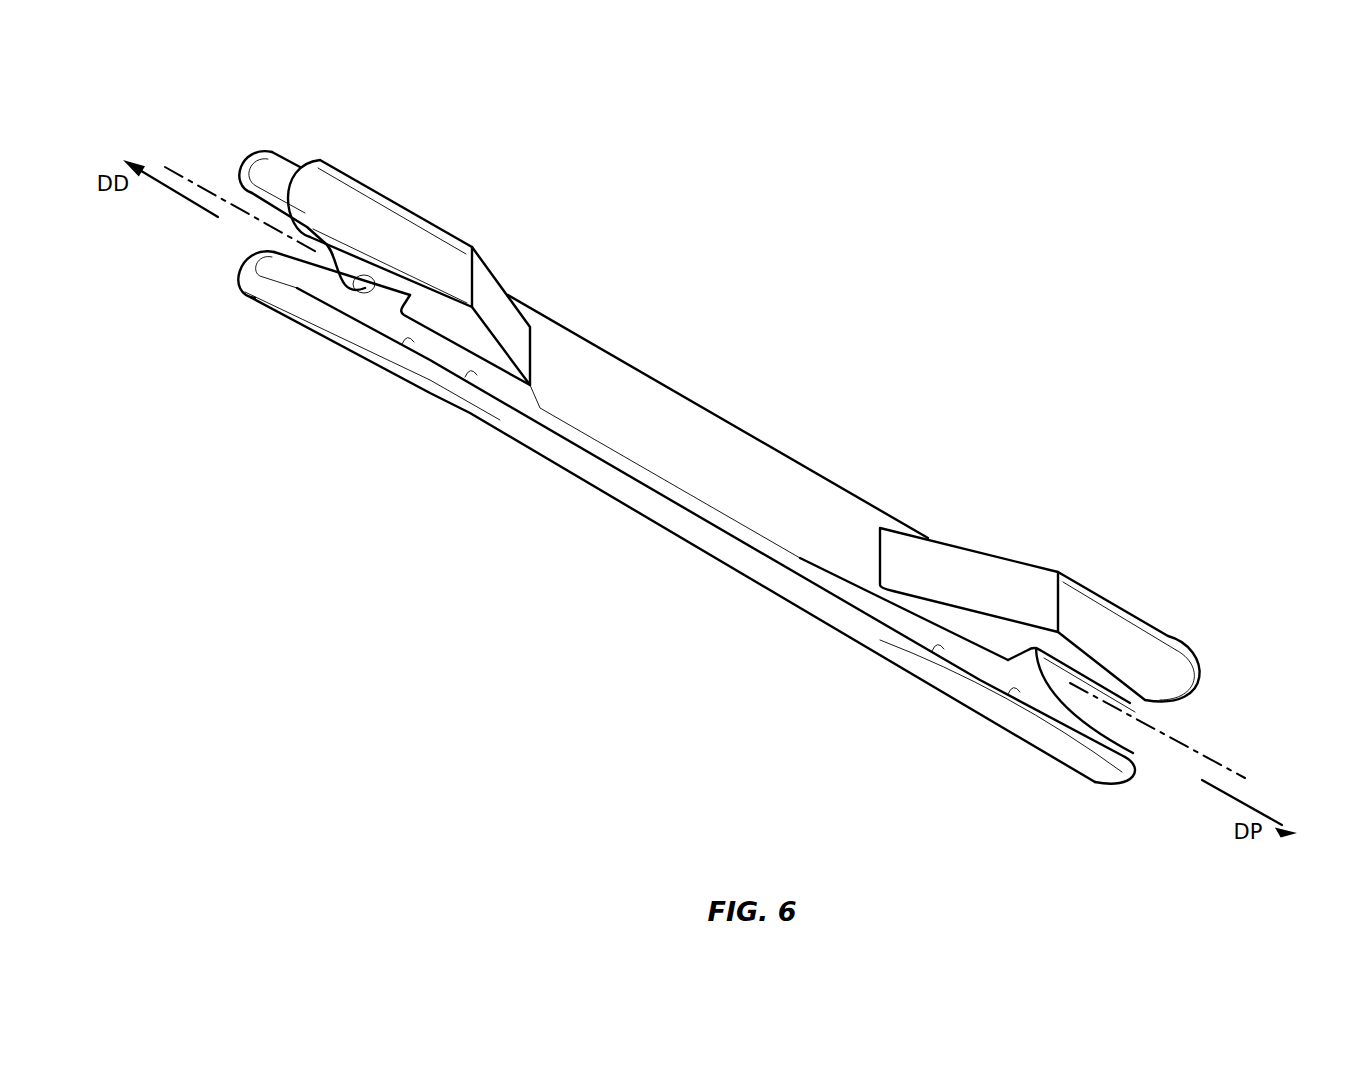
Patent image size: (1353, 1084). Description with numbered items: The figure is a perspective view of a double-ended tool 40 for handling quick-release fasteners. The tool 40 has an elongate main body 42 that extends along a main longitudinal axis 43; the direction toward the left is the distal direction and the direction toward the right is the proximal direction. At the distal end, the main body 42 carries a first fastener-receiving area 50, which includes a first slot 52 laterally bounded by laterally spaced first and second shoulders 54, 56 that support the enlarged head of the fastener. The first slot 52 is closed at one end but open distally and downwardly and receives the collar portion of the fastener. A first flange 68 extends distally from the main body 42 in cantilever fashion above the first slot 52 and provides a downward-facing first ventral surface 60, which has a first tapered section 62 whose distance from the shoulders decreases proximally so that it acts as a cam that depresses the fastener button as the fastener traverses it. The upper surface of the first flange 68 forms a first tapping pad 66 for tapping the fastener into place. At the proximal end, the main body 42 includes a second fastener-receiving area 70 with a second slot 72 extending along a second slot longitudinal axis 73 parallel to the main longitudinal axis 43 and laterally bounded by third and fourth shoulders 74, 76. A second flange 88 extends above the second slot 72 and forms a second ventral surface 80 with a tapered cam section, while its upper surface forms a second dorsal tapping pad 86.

The tool 40 is at (940, 337).
The main body 42 is at (733, 438).
The main longitudinal axis 43 is at (203, 187).
The first fastener-receiving area 50 is at (283, 343).
The first slot 52 is at (277, 233).
The first shoulder 54 is at (297, 277).
The second shoulder 56 is at (282, 162).
The first ventral surface 60 is at (325, 243).
The first tapered section 62 is at (283, 233).
The first tapping pad 66 is at (402, 233).
The first flange 68 is at (347, 197).
The second fastener-receiving area 70 is at (1017, 767).
The second slot 72 is at (1117, 722).
The second slot longitudinal axis 73 is at (1227, 772).
The third shoulder 74 is at (1097, 763).
The fourth shoulder 76 is at (1153, 713).
The second ventral surface 80 is at (1123, 700).
The second dorsal tapping pad 86 is at (1140, 637).
The second flange 88 is at (1107, 625).